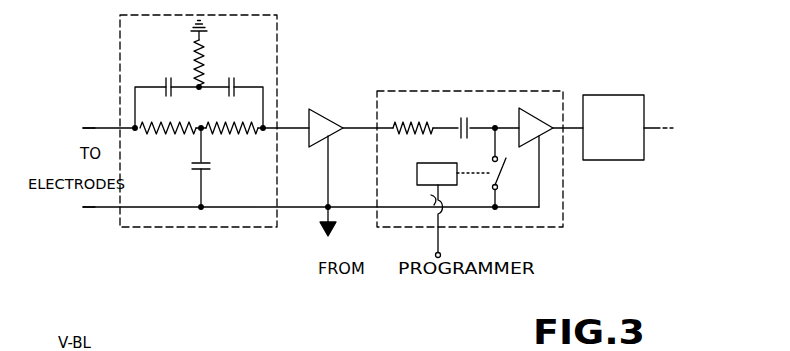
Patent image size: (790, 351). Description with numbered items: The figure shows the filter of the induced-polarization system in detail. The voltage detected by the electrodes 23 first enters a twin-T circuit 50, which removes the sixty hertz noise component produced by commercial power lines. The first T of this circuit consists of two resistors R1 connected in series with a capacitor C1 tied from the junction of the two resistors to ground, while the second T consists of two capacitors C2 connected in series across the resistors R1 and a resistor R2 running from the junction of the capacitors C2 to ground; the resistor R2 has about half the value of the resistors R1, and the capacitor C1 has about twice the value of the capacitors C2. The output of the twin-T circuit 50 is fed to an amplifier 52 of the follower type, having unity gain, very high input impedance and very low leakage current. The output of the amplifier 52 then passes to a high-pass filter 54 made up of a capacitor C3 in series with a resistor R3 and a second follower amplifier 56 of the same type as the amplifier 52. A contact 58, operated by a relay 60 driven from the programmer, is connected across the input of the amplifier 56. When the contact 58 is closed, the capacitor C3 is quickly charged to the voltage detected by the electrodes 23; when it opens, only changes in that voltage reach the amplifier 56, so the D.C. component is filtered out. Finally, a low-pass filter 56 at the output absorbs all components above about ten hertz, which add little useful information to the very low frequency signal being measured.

The electrodes 23 is at (83, 128).
The twin-T circuit 50 is at (277, 38).
The resistors R1 is at (173, 107).
The capacitors C2 is at (174, 67).
The resistor R2 is at (203, 46).
The capacitor C1 is at (208, 171).
The amplifier 52 is at (313, 112).
The high-pass filter 54 is at (540, 91).
The resistor R3 is at (425, 104).
The capacitor C3 is at (479, 100).
The amplifier 56 is at (551, 101).
The contact 58 is at (504, 171).
The relay 60 is at (417, 178).